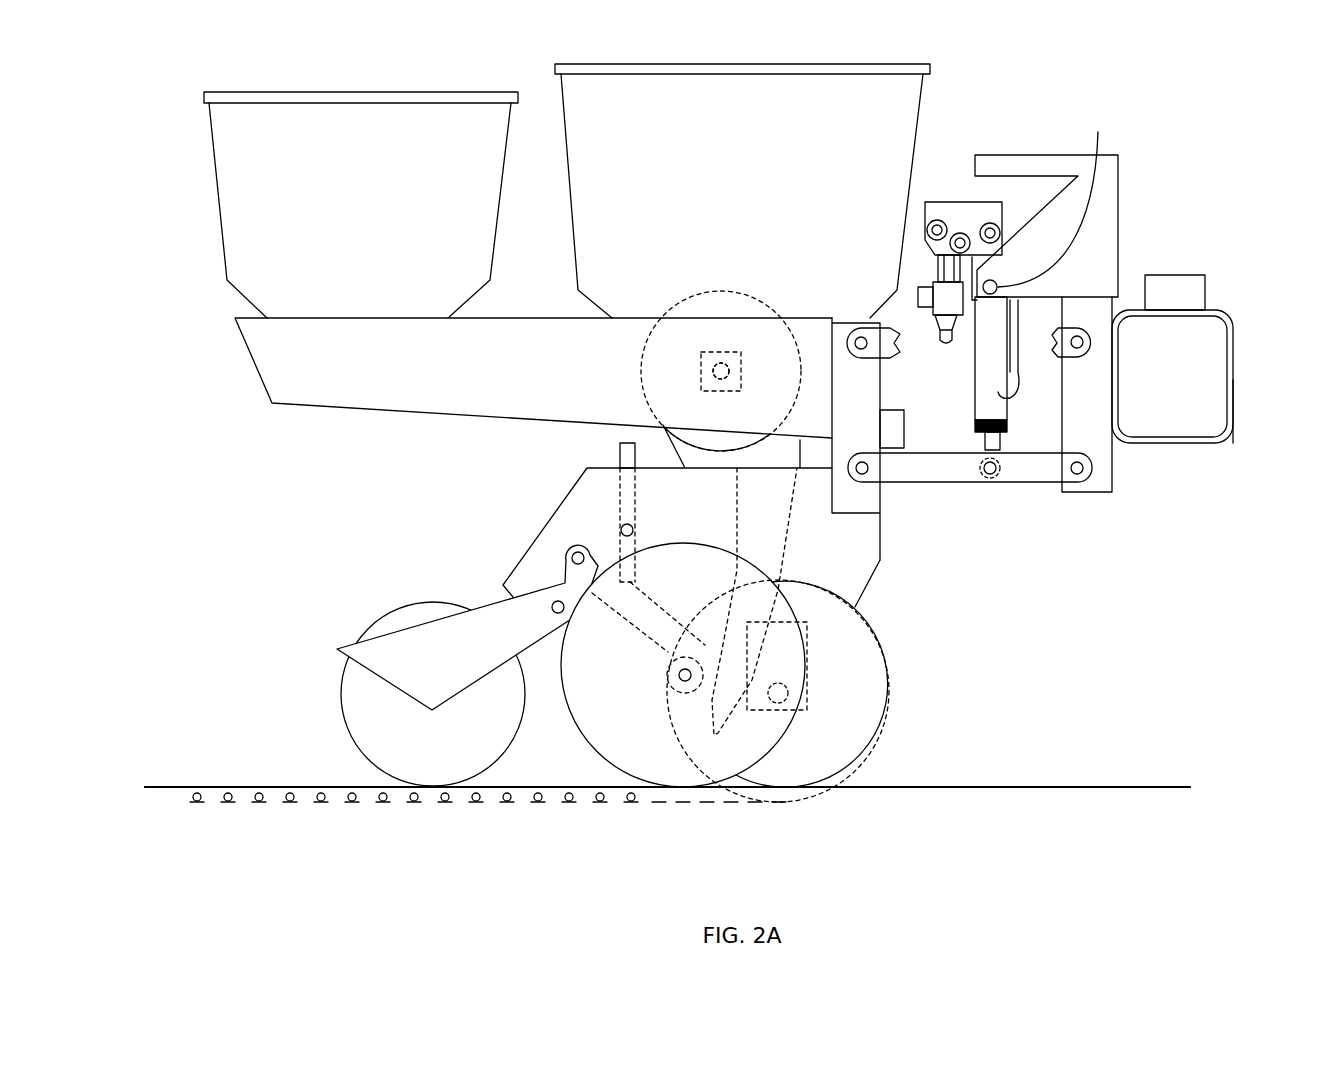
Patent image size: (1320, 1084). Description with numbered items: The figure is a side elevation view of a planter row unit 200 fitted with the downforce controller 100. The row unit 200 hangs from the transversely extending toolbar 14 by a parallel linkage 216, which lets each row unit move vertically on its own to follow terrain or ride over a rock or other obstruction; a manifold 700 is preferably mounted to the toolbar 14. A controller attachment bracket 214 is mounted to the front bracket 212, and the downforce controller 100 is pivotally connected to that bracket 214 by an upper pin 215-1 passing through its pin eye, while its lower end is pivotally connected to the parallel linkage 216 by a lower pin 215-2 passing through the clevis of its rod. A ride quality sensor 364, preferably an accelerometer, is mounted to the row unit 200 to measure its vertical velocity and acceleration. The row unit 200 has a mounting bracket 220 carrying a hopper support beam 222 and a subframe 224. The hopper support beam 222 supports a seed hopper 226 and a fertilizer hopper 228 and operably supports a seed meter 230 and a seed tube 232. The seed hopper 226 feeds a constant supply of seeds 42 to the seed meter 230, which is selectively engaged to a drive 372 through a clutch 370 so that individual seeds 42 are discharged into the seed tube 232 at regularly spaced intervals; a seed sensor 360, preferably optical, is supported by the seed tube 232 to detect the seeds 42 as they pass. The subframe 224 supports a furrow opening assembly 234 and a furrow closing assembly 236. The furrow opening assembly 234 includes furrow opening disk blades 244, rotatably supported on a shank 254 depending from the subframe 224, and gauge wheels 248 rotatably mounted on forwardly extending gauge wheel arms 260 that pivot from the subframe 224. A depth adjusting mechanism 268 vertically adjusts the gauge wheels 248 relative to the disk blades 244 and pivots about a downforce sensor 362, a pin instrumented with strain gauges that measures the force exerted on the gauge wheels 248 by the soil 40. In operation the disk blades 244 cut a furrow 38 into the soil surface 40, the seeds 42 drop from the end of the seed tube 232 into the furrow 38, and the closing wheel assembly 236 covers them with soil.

The row unit 200 is at (135, 258).
The fertilizer hopper 228 is at (361, 205).
The seed hopper 226 is at (742, 191).
The hopper support beam 222 is at (533, 378).
The mounting bracket 220 is at (866, 439).
The ride quality sensor 364 is at (907, 428).
The shank 254 is at (876, 573).
The seed meter 230 is at (645, 398).
The clutch 370 is at (745, 370).
The drive 372 is at (721, 371).
The furrow closing assembly 236 is at (330, 610).
The subframe 224 is at (558, 503).
The gauge wheel arm 260 is at (525, 567).
The gauge wheel 248 is at (683, 665).
The furrow opening disk blade 244 is at (812, 684).
The seed sensor 360 is at (787, 627).
The depth adjusting mechanism 268 is at (605, 503).
The downforce sensor 362 is at (630, 528).
The seed tube 232 is at (759, 601).
The lower pin 215-2 is at (1003, 452).
The parallel linkage 216 is at (985, 488).
The front bracket 212 is at (1080, 492).
The controller attachment bracket 214 is at (1118, 232).
The upper pin 215-1 is at (1062, 198).
The downforce controller 100 is at (1017, 218).
The manifold 700 is at (1172, 359).
The toolbar 14 is at (1200, 445).
The furrow opening assembly 234 is at (968, 648).
The soil surface 40 is at (1082, 787).
The seeds 42 is at (588, 805).
The furrow 38 is at (677, 803).